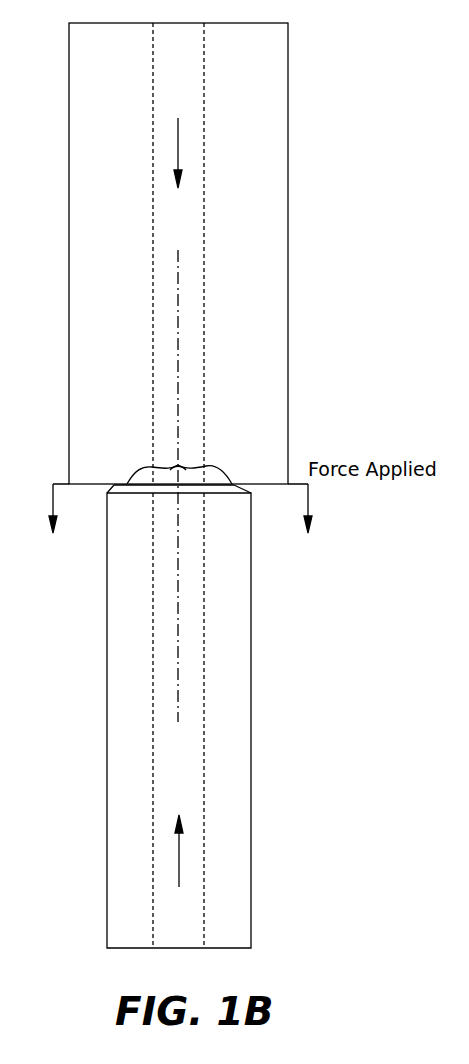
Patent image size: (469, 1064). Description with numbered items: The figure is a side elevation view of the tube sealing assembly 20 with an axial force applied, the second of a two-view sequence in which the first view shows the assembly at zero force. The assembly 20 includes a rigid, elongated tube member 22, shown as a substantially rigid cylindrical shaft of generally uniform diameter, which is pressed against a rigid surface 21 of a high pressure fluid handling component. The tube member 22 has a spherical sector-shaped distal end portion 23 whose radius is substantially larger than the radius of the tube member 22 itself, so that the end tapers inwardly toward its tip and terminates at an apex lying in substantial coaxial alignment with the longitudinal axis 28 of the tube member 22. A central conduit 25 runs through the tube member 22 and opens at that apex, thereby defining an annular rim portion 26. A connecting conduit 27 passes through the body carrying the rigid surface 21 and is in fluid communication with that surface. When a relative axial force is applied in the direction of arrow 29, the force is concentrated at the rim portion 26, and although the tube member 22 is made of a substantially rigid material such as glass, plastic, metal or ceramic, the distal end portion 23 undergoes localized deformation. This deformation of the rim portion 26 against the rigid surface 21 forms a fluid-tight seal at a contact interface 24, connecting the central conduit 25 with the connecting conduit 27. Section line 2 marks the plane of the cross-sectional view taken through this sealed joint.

The section line 2- 2 is at (180, 524).
The tube sealing assembly 20 is at (313, 406).
The rigid surface 21 is at (84, 486).
The tube member 22 is at (250, 652).
The distal end portion 23 is at (232, 484).
The contact interface 24 is at (177, 465).
The central conduit 25 is at (201, 605).
The rim portion 26 is at (127, 484).
The connecting conduit 27 is at (160, 289).
The longitudinal axis 28 is at (182, 655).
The arrow 29 is at (178, 143).